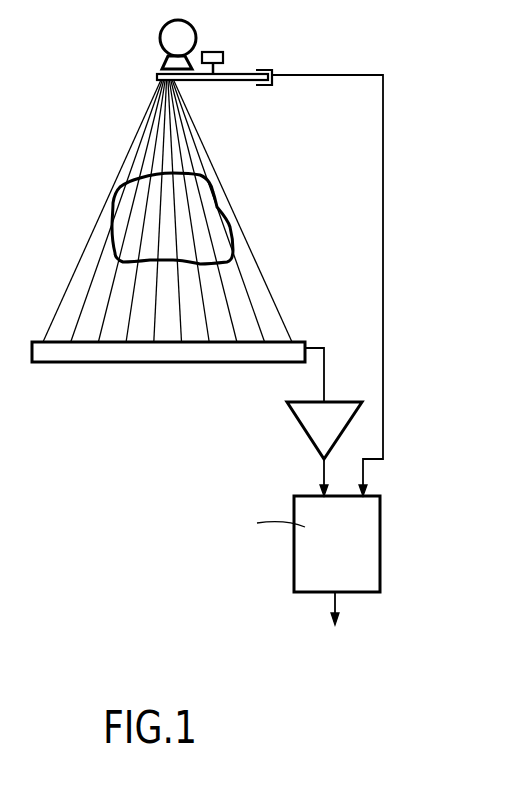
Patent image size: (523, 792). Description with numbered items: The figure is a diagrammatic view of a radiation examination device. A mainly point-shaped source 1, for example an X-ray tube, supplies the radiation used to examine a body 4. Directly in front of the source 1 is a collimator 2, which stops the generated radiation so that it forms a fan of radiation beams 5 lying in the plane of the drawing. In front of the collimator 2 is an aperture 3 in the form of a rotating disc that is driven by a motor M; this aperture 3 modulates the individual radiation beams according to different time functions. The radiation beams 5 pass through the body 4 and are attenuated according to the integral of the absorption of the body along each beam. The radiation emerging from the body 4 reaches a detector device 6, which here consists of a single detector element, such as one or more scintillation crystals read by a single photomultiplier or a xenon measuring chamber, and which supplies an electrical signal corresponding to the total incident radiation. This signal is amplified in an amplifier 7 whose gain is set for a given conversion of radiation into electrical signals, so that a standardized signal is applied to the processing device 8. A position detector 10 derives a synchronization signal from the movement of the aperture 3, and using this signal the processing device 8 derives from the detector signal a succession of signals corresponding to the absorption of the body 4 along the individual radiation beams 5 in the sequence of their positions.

The source 1 is at (161, 32).
The collimator 2 is at (163, 62).
The aperture 3 is at (257, 81).
The motor M is at (215, 52).
The position detector 10 is at (278, 78).
The body 4 is at (221, 231).
The radiation beams 5 is at (242, 295).
The detector device 6 is at (135, 352).
The amplifier 7 is at (317, 420).
The processing device 8 is at (320, 541).